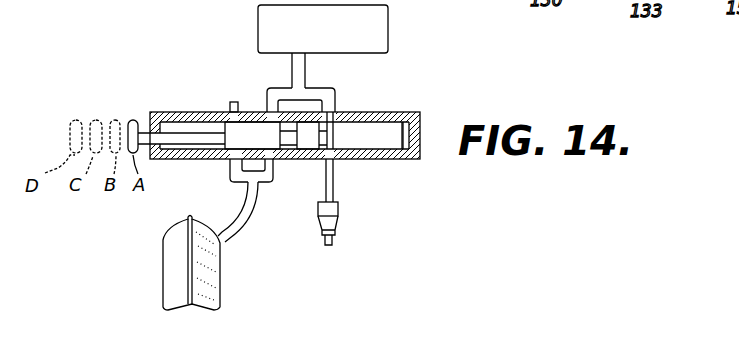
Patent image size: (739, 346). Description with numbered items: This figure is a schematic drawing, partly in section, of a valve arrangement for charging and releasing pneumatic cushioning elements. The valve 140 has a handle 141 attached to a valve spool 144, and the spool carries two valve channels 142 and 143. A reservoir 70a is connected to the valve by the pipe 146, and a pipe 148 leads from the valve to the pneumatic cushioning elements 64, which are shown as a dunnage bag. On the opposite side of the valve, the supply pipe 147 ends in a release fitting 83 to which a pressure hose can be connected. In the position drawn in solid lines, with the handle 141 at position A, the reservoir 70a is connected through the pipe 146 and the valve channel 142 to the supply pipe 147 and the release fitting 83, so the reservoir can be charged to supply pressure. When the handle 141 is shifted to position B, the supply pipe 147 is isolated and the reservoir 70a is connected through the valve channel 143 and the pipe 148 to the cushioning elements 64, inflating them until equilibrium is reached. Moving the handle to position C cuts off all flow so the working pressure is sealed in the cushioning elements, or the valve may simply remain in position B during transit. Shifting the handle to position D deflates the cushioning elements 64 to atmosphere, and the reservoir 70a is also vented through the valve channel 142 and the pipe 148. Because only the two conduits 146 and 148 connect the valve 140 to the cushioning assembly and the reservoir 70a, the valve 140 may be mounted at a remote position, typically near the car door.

The valve 140 is at (421, 163).
The handle 141 is at (133, 119).
The valve spool 144 is at (235, 102).
The reservoir 70a is at (388, 33).
The pipe 146 is at (306, 70).
The valve channel 142 is at (331, 121).
The supply pipe 147 is at (334, 173).
The release fitting 83 is at (338, 207).
The valve channel 143 is at (287, 160).
The pipe 148 is at (238, 230).
The pneumatic cushioning elements 64 is at (170, 257).